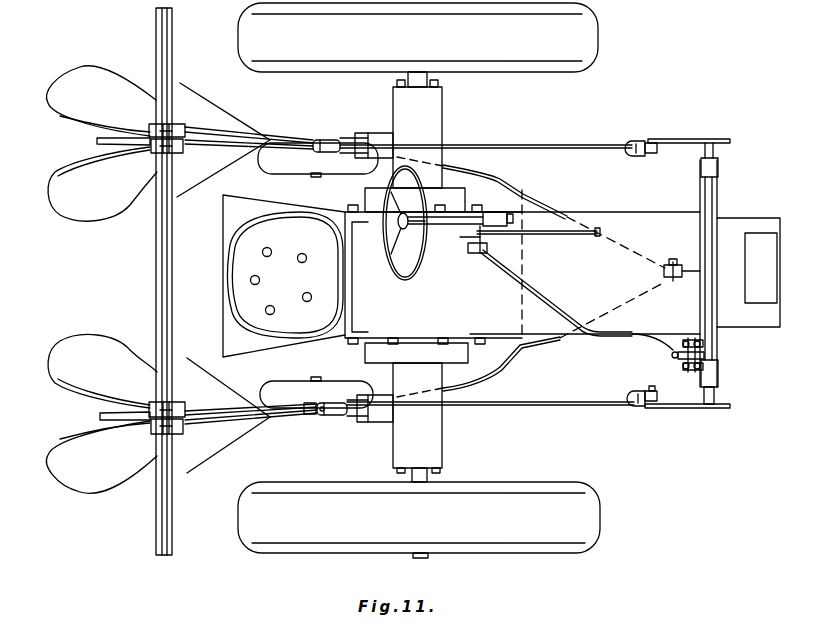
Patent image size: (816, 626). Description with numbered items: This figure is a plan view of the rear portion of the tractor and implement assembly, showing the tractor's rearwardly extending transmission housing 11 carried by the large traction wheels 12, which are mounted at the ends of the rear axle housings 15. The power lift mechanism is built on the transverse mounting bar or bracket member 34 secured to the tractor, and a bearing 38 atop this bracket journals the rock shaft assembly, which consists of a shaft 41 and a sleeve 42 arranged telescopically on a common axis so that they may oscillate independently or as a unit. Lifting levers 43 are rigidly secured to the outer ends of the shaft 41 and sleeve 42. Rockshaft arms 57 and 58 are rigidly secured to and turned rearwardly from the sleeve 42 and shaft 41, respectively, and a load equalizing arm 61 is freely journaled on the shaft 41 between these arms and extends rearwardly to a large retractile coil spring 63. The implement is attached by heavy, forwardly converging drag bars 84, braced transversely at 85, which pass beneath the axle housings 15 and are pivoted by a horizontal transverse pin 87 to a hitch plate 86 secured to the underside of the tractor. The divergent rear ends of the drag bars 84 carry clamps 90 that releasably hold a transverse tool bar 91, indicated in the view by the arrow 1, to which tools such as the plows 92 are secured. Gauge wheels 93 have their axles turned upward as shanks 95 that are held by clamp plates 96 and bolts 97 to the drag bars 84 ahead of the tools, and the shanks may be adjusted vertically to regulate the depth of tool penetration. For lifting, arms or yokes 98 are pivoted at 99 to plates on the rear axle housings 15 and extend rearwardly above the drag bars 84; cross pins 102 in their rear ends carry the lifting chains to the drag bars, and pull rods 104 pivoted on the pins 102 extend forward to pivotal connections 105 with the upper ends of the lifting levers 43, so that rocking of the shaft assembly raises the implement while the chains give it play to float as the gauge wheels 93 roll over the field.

The vehicle 1 is at (154, 270).
The transmission housing 11 is at (597, 213).
The traction wheels 12 is at (598, 27).
The rear axle housings 15 is at (442, 97).
The mounting bar or bracket member 34 is at (719, 228).
The bearing 38 is at (718, 164).
The shaft 41 is at (712, 189).
The sleeve 42 is at (717, 398).
The lifting levers 43 is at (674, 139).
The rockshaft arm 57 is at (703, 341).
The rockshaft arm 58 is at (716, 371).
The load equalizing lever or arm 61 is at (714, 354).
The retractile coil spring 63 is at (673, 357).
The drag bars 84 is at (237, 134).
The transverse brace 85 is at (535, 346).
The hitch plate 86 is at (675, 265).
The pin 87 is at (672, 282).
The clamps 90 is at (203, 98).
The transverse tool bar 91 is at (175, 540).
The plows 92 is at (108, 207).
The gauge wheels 93 is at (268, 174).
The shanks 95 is at (316, 148).
The clamp plates 96 is at (305, 414).
The bolts 97 is at (322, 418).
The lifting arms or yokes 98 is at (366, 137).
The pivot 99 is at (397, 139).
The cross pins 102 is at (338, 141).
The pull rods or bars 104 is at (565, 144).
The pivotal connection 105 is at (651, 157).